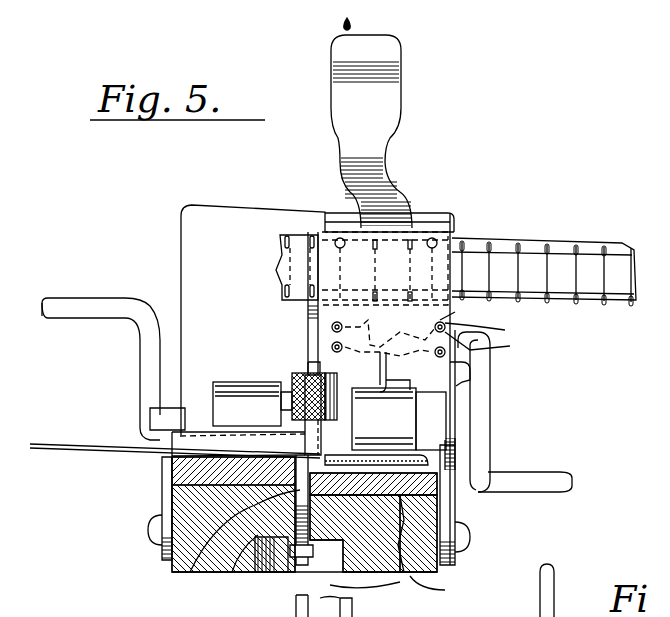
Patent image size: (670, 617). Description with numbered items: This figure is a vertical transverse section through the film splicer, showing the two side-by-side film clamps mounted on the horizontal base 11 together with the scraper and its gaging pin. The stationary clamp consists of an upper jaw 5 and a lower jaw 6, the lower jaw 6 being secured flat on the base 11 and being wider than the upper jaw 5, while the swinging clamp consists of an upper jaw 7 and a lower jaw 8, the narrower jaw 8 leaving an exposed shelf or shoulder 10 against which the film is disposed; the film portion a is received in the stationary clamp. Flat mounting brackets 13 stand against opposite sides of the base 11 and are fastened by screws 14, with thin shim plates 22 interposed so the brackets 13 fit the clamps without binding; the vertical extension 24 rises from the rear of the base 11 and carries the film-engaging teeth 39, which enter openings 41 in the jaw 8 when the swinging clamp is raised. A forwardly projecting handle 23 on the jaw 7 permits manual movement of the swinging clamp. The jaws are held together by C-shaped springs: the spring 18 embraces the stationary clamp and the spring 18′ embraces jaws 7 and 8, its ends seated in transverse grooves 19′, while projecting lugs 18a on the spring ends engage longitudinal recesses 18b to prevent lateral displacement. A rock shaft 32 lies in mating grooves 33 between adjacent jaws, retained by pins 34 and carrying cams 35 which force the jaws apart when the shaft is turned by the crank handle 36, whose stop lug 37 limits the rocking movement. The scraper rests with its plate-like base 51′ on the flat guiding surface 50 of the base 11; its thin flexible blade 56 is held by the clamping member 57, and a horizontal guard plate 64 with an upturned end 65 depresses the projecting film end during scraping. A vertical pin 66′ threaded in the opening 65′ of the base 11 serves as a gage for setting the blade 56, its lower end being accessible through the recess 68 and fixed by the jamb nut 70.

The handle 23 is at (383, 100).
The extension 24 is at (238, 206).
The shelf or shoulder 10 is at (305, 226).
The film-engaging teeth 39 is at (343, 250).
The openings 41 is at (356, 250).
The lower jaw 6 is at (560, 240).
The rock shaft 32 is at (458, 318).
The pins 34 is at (445, 337).
The cams 35 is at (383, 336).
The mating grooves 33 is at (308, 334).
The lower jaw 8 is at (462, 376).
The stop lug 37 is at (140, 362).
The handle 36 is at (475, 420).
The scraper base 51′ is at (488, 500).
The upper jaw 7 is at (116, 455).
The film portion a is at (102, 483).
The upper jaw 5 is at (240, 452).
The C-shaped spring 18 is at (252, 404).
The scraper blade 56 is at (308, 363).
The clamping member 57 is at (290, 380).
The C-shaped spring 18′ is at (384, 419).
The longitudinal recesses 18b is at (380, 370).
The projecting lugs 18a is at (440, 370).
The transverse grooves 19′ is at (432, 402).
The upturned end 65 is at (440, 448).
The guard plate 64 is at (458, 456).
The base 11 is at (170, 572).
The jamb nut 70 is at (278, 572).
The vertical opening 65′ is at (238, 572).
The vertical pin 66′ is at (200, 572).
The recess 68 is at (365, 593).
The shim plates 22 is at (440, 572).
The flat upper surface portion 50 is at (427, 594).
The mounting brackets 13 is at (160, 496).
The screws 14 is at (148, 538).